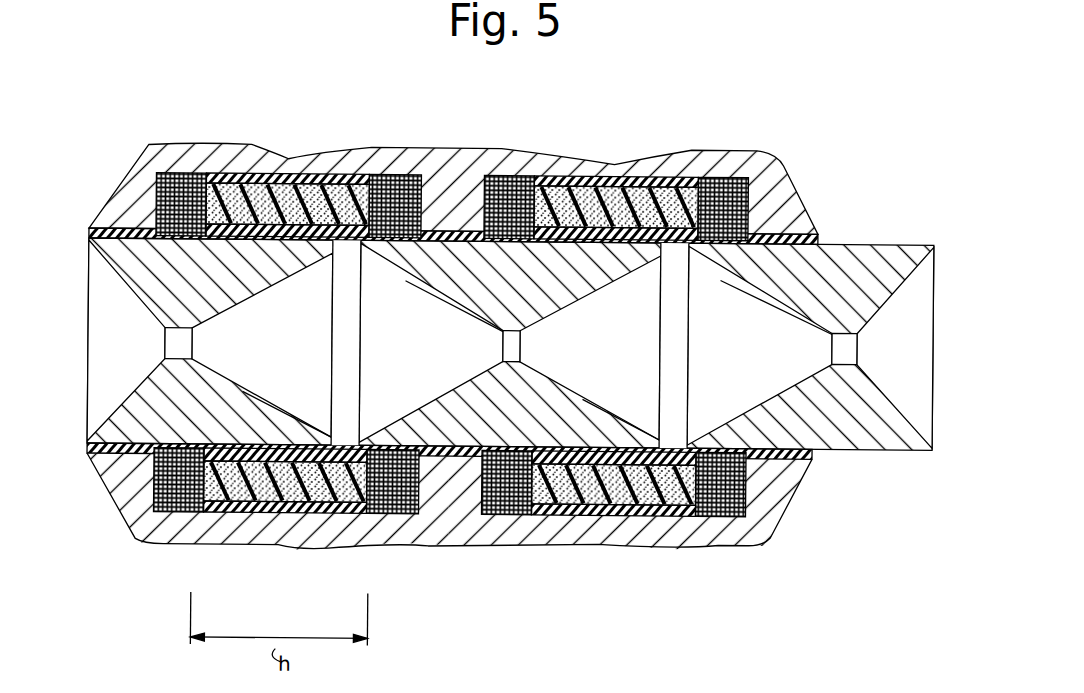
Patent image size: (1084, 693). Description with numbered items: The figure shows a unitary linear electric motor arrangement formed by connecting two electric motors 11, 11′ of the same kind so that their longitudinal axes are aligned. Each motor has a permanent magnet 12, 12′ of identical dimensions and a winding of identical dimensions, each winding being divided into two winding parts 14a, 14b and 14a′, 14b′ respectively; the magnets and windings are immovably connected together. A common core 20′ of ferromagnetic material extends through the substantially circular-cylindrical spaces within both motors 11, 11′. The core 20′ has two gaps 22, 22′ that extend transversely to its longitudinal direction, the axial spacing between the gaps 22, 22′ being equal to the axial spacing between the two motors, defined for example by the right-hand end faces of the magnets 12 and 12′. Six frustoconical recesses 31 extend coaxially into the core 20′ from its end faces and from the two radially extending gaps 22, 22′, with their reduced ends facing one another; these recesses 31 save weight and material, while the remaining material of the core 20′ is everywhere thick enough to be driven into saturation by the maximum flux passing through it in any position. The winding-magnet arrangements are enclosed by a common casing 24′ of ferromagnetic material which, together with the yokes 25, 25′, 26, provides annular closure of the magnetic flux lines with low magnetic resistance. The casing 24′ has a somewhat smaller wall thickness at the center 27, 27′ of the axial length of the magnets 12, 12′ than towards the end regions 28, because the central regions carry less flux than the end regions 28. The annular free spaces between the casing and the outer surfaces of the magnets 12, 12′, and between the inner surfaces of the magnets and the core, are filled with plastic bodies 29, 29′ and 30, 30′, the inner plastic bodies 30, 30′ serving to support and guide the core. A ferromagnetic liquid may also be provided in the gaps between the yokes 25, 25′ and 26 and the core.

The electric motor 11 is at (252, 146).
The electric motor 11′ is at (617, 148).
The permanent magnet 12 is at (216, 183).
The permanent magnet 12′ is at (536, 180).
The winding part 14a is at (160, 172).
The winding part 14b is at (400, 172).
The winding part 14a′ is at (500, 170).
The winding part 14b′ is at (711, 170).
The common core 20′ is at (851, 252).
The gap 22 is at (348, 511).
The gap 22′ is at (670, 508).
The casing 24′ is at (513, 512).
The yoke 25 is at (120, 477).
The yoke 25′ is at (445, 500).
The yoke 26 is at (785, 492).
The center of the axial length 27 is at (288, 172).
The center of the axial length 27′ is at (614, 157).
The end region 28 is at (160, 142).
The plastic body 29 is at (275, 511).
The plastic body 29′ is at (625, 508).
The plastic body 30 is at (212, 511).
The plastic body 30′ is at (555, 508).
The frustoconical recess 31 is at (126, 359).